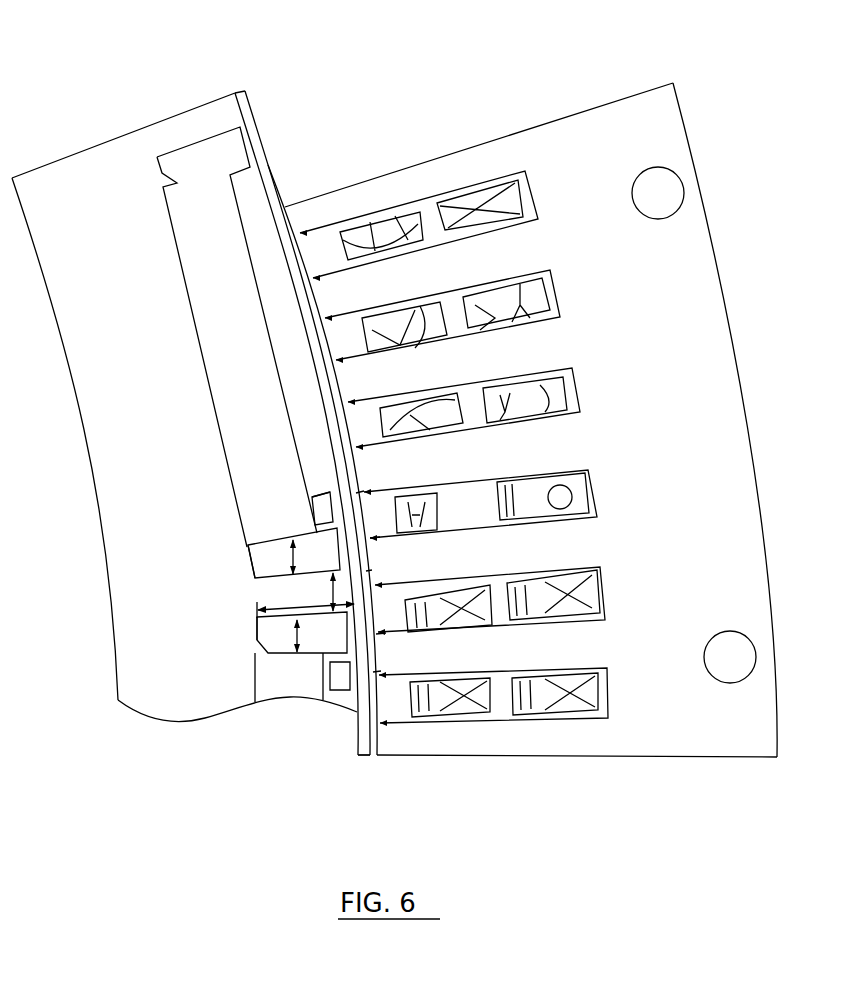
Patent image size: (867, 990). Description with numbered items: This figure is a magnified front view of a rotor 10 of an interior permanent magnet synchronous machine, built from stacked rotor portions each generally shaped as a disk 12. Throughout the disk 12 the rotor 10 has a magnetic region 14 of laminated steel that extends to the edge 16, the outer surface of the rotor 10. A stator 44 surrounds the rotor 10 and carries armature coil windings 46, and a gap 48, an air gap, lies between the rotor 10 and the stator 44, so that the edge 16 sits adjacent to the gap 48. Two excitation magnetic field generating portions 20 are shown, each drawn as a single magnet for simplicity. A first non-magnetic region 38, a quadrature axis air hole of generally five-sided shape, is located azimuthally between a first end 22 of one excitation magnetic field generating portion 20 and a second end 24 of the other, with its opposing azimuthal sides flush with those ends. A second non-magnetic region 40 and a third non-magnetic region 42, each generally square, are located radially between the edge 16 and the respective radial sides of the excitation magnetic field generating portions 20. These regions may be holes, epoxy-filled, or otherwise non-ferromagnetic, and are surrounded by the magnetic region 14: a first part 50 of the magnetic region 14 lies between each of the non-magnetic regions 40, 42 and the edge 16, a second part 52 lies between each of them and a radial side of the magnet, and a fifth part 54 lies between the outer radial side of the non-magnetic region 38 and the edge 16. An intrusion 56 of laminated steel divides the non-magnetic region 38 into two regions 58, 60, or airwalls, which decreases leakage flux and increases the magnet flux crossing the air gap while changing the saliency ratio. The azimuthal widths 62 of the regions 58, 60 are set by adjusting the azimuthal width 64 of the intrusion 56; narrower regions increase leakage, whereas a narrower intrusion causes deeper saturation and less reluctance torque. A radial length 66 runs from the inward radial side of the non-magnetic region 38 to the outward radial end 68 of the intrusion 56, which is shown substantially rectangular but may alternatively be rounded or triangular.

The rotor 10 is at (342, 84).
The disk 12 is at (250, 147).
The magnetic region 14 is at (110, 410).
The edge 16 is at (272, 172).
The excitation magnetic field generating portion 20 is at (198, 243).
The first end 22 is at (268, 543).
The second end 24 is at (313, 655).
The first non-magnetic region 38 is at (269, 643).
The second non-magnetic region 40 is at (340, 585).
The third non-magnetic region 42 is at (358, 668).
The stator 44 is at (663, 320).
The armature coil windings 46 is at (552, 488).
The gap 48 is at (312, 300).
The first part 50 is at (358, 493).
The second part 52 is at (310, 500).
The fifth part 54 is at (374, 542).
The intrusion 56 is at (306, 599).
The region 58 is at (263, 567).
The region 60 is at (273, 635).
The azimuthal width 62 is at (285, 548).
The azimuthal width of the intrusion 64 is at (305, 482).
The radial length 66 is at (330, 605).
The outward radial end 68 is at (366, 571).